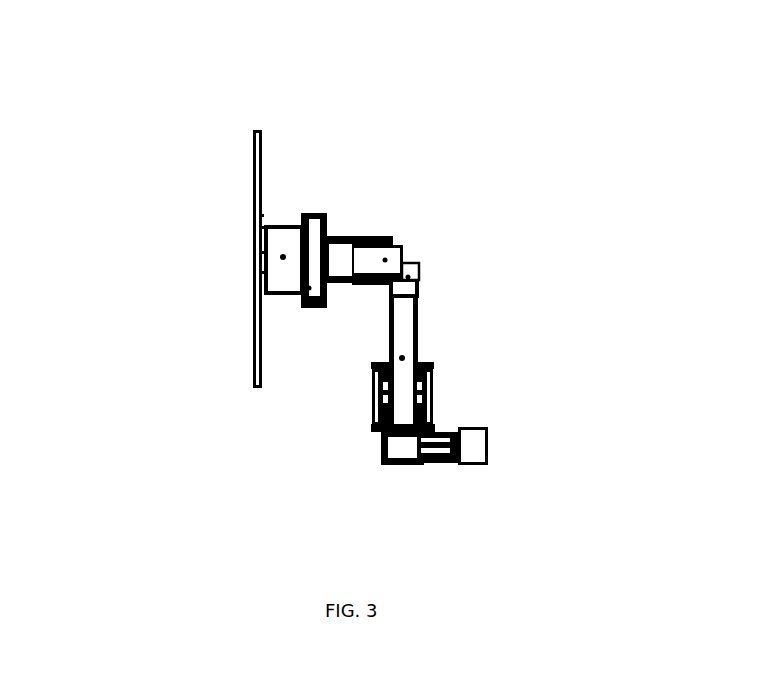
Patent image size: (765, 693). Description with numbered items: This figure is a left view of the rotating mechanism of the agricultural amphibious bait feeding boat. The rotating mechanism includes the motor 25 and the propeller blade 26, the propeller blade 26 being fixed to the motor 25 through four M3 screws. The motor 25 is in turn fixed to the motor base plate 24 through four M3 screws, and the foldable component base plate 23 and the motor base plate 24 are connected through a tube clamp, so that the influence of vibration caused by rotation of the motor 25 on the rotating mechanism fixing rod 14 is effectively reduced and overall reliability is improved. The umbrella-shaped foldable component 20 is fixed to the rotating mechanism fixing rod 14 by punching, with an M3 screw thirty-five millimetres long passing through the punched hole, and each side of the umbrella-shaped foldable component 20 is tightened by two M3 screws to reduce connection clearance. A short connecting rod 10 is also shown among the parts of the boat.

The short connecting rod 10 is at (460, 430).
The rotating mechanism fixing rod 14 is at (402, 358).
The umbrella-shaped foldable component 20 is at (420, 267).
The foldable component base plate 23 is at (328, 233).
The motor base plate 24 is at (309, 288).
The motor 25 is at (283, 257).
The propeller blade 26 is at (256, 223).